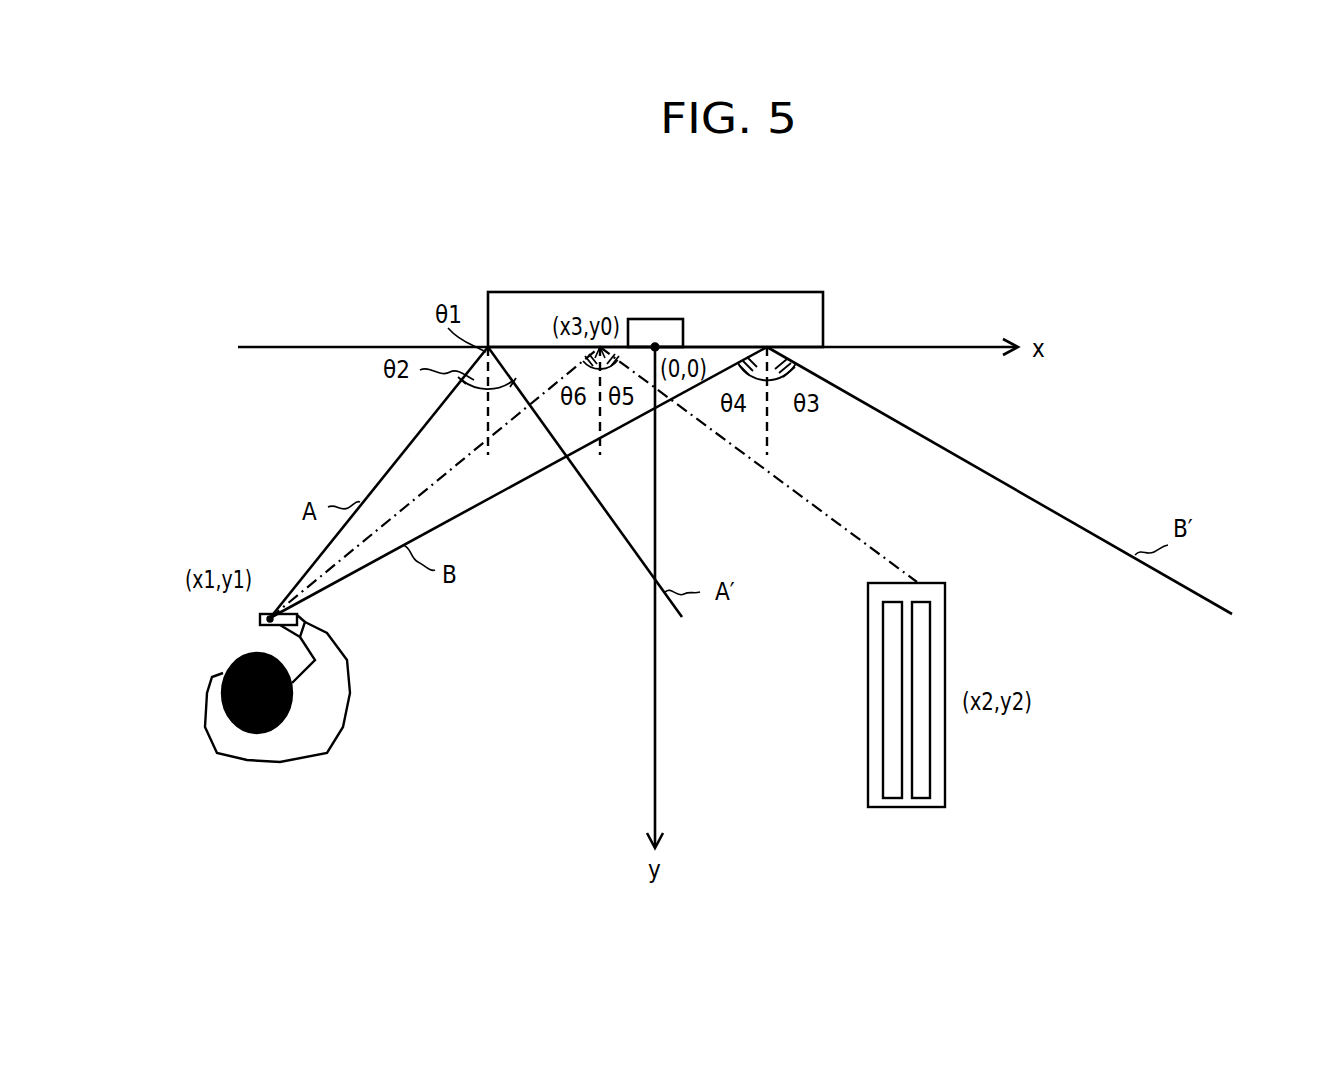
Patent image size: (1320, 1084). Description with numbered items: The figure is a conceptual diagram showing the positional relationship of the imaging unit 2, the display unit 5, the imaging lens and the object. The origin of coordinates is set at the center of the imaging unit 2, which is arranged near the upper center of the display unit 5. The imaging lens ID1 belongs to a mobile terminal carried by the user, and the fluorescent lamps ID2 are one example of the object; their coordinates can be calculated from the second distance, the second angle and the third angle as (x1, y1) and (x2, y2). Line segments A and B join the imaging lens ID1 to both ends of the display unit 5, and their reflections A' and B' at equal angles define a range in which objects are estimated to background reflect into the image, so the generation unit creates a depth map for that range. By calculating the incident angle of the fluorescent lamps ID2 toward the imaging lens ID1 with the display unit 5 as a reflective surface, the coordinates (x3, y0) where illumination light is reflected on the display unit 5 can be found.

The imaging unit 2 is at (655, 319).
The display unit 5 is at (766, 292).
The imaging lens ID1 is at (266, 618).
The fluorescent lamps ID2 is at (945, 735).